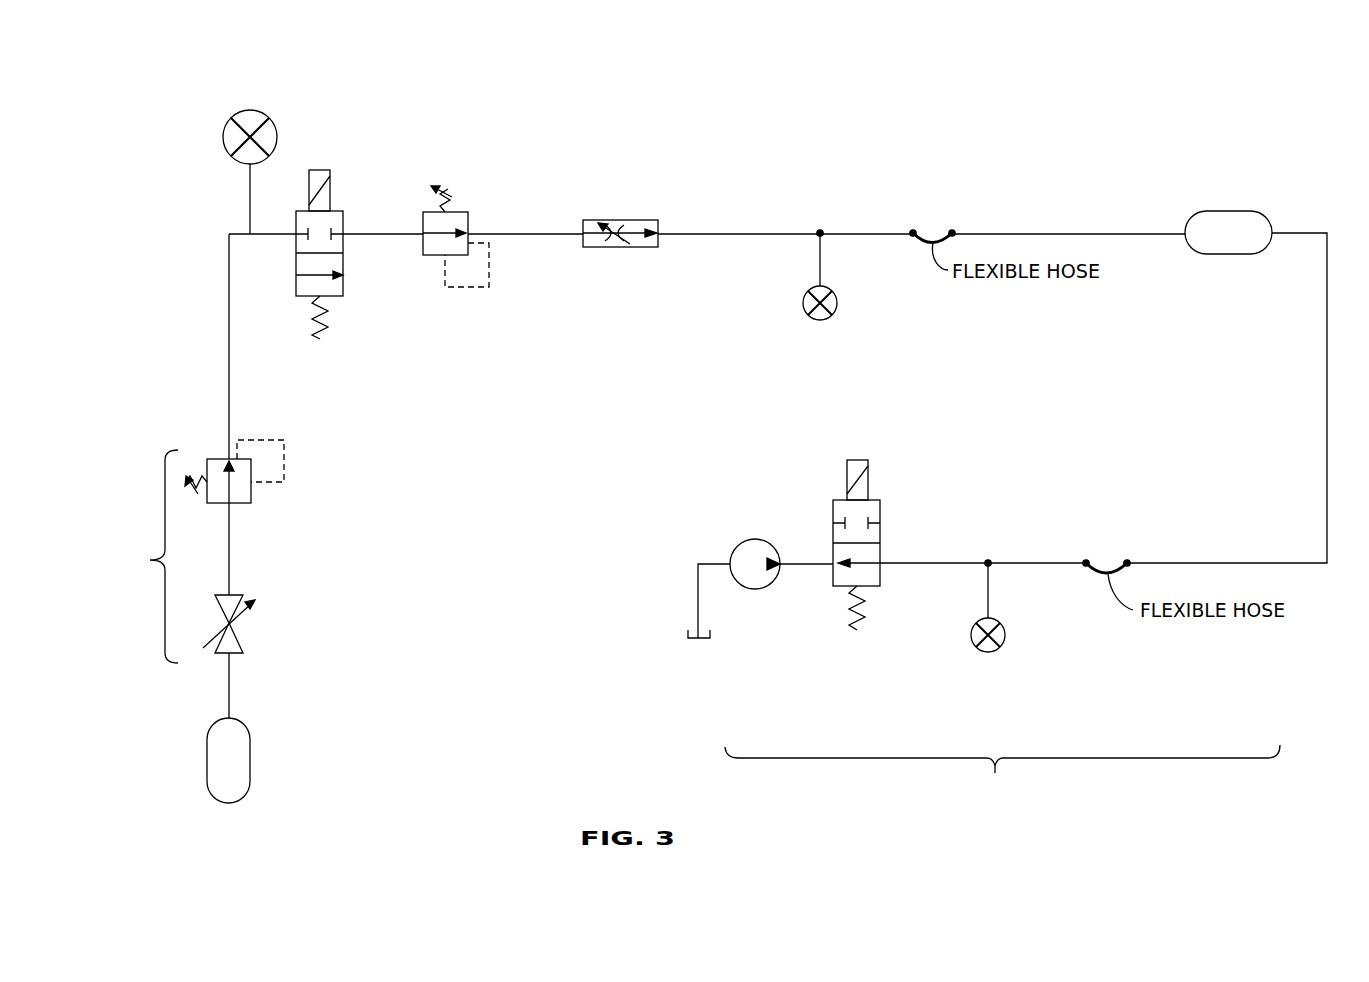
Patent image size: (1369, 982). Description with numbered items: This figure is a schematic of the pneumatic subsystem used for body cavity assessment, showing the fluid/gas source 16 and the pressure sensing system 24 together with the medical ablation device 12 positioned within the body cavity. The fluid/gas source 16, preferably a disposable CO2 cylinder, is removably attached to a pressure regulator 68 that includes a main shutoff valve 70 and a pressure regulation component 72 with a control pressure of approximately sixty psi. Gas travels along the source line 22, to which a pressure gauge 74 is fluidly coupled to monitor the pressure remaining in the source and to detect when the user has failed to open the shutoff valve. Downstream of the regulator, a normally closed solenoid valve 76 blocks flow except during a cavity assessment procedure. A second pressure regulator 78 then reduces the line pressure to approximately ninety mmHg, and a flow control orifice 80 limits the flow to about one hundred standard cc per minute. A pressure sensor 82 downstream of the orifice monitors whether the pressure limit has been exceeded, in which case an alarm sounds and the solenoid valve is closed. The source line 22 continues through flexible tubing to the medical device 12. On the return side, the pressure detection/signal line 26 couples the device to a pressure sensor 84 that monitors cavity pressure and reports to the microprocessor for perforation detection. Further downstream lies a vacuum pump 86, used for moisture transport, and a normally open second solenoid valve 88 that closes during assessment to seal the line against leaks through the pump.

The medical ablation device 12 is at (1220, 210).
The fluid/gas source 16 is at (250, 747).
The source line 22 is at (229, 303).
The pressure sensing system 24 is at (1077, 760).
The pressure detection/signal line 26 is at (1042, 563).
The pressure regulator 68 is at (163, 540).
The main shutoff valve 70 is at (237, 592).
The pressure regulation component 72 is at (232, 478).
The pressure gauge 74 is at (242, 111).
The solenoid valve 76 is at (332, 178).
The second pressure regulator 78 is at (450, 243).
The flow control orifice 80 is at (623, 220).
The pressure sensor 82 is at (832, 318).
The pressure sensor 84 is at (1005, 643).
The vacuum pump 86 is at (737, 540).
The second solenoid valve 88 is at (843, 578).